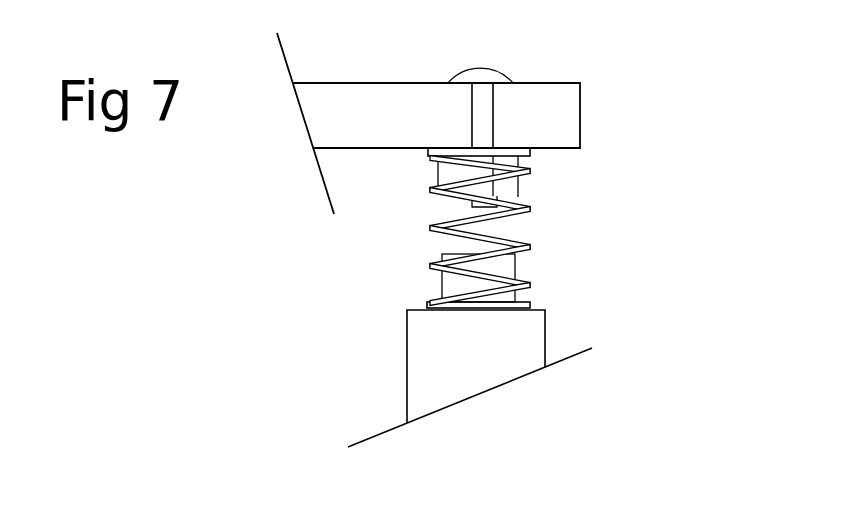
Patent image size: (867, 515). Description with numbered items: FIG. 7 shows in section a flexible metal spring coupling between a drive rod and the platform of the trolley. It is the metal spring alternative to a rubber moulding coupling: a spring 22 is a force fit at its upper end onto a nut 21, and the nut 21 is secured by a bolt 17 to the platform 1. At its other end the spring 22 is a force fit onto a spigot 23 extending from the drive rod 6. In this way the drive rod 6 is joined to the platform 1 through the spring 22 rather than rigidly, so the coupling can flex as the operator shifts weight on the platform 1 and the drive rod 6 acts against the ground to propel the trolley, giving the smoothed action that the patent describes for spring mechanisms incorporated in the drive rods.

The platform 1 is at (537, 87).
The bolt 17 is at (483, 130).
The nut 21 is at (510, 190).
The spring 22 is at (530, 237).
The spigot 23 is at (515, 265).
The drive rod 6 is at (528, 325).